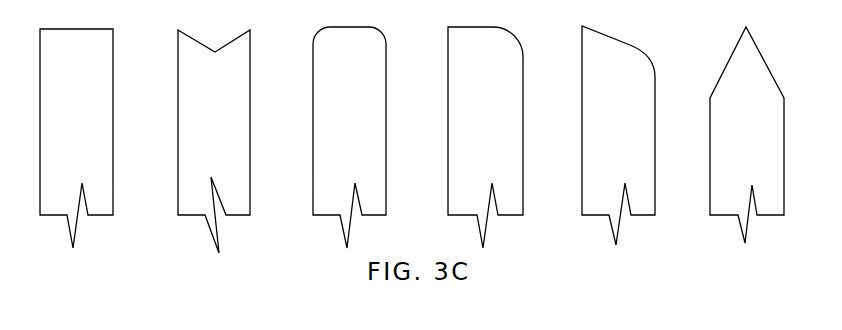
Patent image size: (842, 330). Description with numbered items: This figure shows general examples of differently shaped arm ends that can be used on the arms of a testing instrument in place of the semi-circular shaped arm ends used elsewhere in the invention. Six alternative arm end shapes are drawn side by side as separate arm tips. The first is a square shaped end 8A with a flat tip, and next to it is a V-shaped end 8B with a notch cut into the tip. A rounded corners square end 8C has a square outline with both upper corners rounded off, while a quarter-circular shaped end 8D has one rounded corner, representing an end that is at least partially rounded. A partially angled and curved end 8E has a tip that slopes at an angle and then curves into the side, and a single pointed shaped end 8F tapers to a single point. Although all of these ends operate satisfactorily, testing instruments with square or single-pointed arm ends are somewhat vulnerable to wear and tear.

The square shaped end 8A is at (91, 72).
The V-shaped end 8B is at (229, 89).
The rounded corners square end 8C is at (366, 72).
The quarter-circular shaped end 8D is at (501, 72).
The partially angled and curved end 8E is at (632, 86).
The single pointed shaped end 8F is at (762, 102).